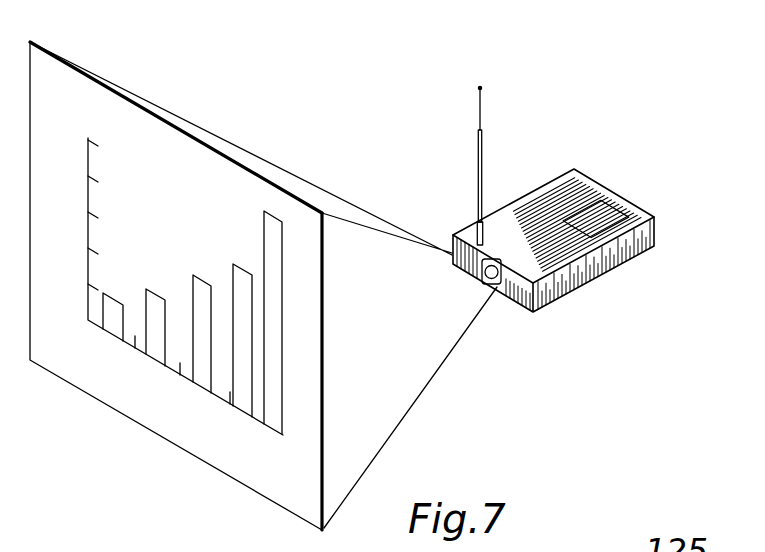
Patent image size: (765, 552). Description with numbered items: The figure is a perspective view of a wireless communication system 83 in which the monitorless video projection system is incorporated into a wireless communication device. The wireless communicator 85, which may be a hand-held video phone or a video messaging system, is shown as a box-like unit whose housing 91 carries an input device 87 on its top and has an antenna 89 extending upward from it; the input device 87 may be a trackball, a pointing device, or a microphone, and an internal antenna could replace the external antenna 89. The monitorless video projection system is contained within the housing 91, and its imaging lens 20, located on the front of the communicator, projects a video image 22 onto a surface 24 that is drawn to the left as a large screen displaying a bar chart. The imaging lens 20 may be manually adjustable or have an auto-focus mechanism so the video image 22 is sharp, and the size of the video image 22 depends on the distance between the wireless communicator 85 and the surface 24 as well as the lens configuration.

The imaging lens 20 is at (498, 287).
The video image 22 is at (237, 443).
The surface 24 is at (35, 68).
The wireless communication system 83 is at (422, 62).
The wireless communicator 85 is at (574, 289).
The input device 87 is at (612, 207).
The antenna 89 is at (482, 155).
The housing 91 is at (563, 183).